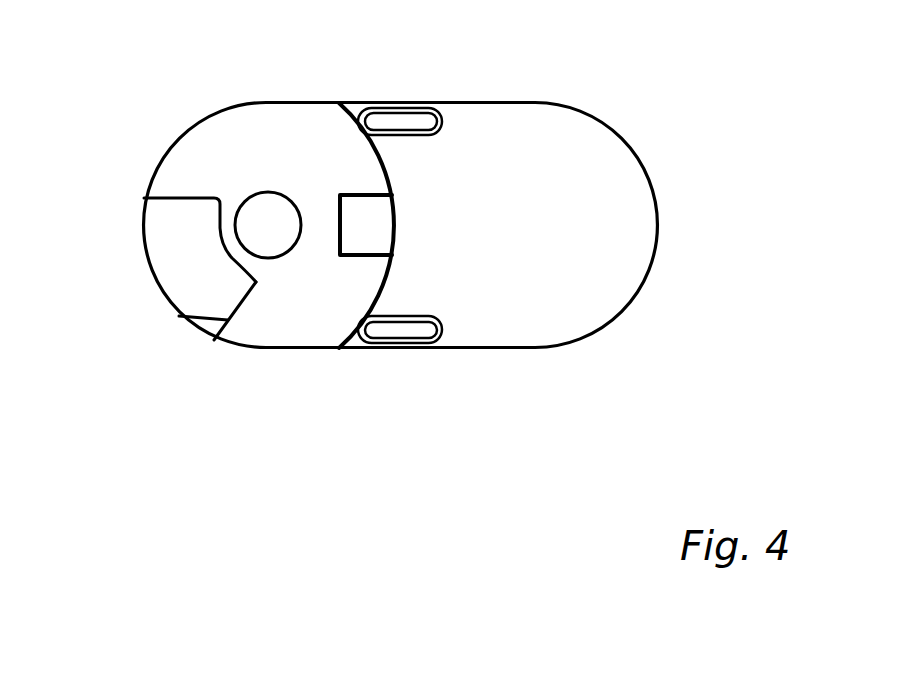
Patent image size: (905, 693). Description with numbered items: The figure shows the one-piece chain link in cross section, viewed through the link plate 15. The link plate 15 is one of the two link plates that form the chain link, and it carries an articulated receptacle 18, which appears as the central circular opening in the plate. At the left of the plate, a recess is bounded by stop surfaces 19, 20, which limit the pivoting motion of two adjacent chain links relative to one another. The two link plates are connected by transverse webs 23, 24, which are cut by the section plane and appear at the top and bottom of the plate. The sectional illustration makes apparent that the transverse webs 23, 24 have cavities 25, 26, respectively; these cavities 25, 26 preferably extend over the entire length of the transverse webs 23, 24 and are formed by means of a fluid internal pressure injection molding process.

The link plate 15 is at (527, 102).
The articulated receptacle 18 is at (267, 245).
The stop surface 19 is at (187, 318).
The stop surface 20 is at (147, 197).
The transverse web 23 is at (403, 103).
The transverse web 24 is at (402, 348).
The cavity 25 is at (418, 122).
The cavity 26 is at (412, 333).